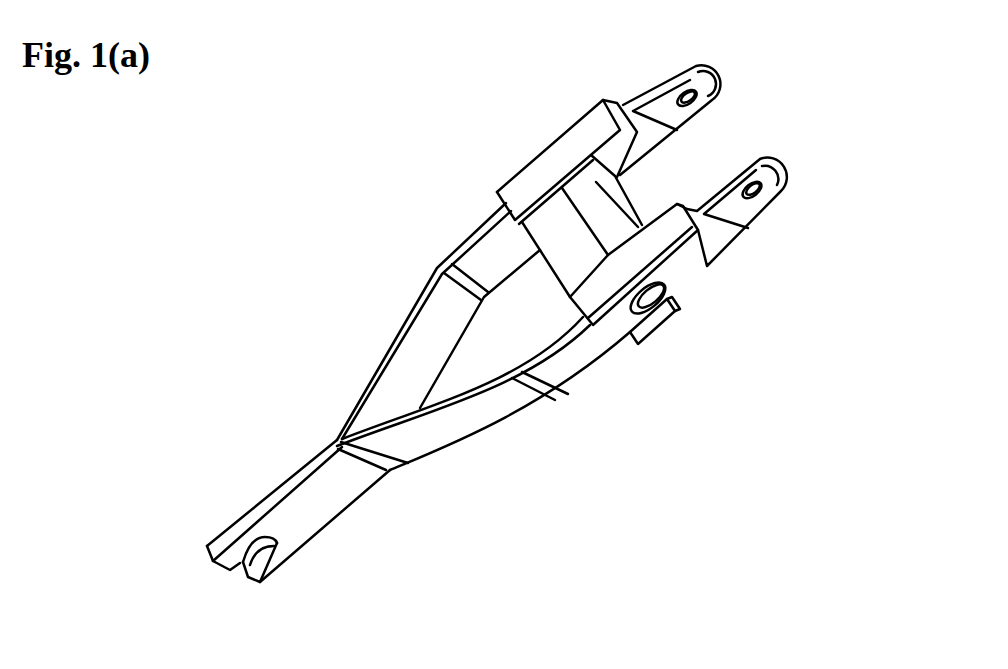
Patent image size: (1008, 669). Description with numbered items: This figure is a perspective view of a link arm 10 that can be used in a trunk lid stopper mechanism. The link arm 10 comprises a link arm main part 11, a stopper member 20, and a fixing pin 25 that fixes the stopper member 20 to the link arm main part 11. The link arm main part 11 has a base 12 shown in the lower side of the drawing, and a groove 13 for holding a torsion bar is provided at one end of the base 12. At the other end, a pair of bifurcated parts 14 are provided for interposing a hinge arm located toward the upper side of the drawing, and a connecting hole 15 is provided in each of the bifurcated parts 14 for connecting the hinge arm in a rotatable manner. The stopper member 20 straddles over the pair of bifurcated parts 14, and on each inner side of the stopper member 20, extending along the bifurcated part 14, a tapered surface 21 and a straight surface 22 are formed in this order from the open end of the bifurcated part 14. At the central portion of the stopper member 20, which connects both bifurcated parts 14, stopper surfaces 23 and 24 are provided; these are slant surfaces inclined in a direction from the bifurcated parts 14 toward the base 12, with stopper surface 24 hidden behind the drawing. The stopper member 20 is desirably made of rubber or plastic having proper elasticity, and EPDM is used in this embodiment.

The link arm 10 is at (398, 196).
The link arm main part 11 is at (457, 423).
The base 12 is at (315, 517).
The groove 13 is at (258, 555).
The bifurcated parts 14 is at (488, 253).
The connecting hole 15 is at (687, 95).
The stopper member 20 is at (553, 282).
The tapered surface 21 is at (607, 142).
The straight surface 22 is at (594, 163).
The stopper surface 23 is at (618, 233).
The stopper surface 24 is at (634, 264).
The fixing pin 25 is at (652, 297).